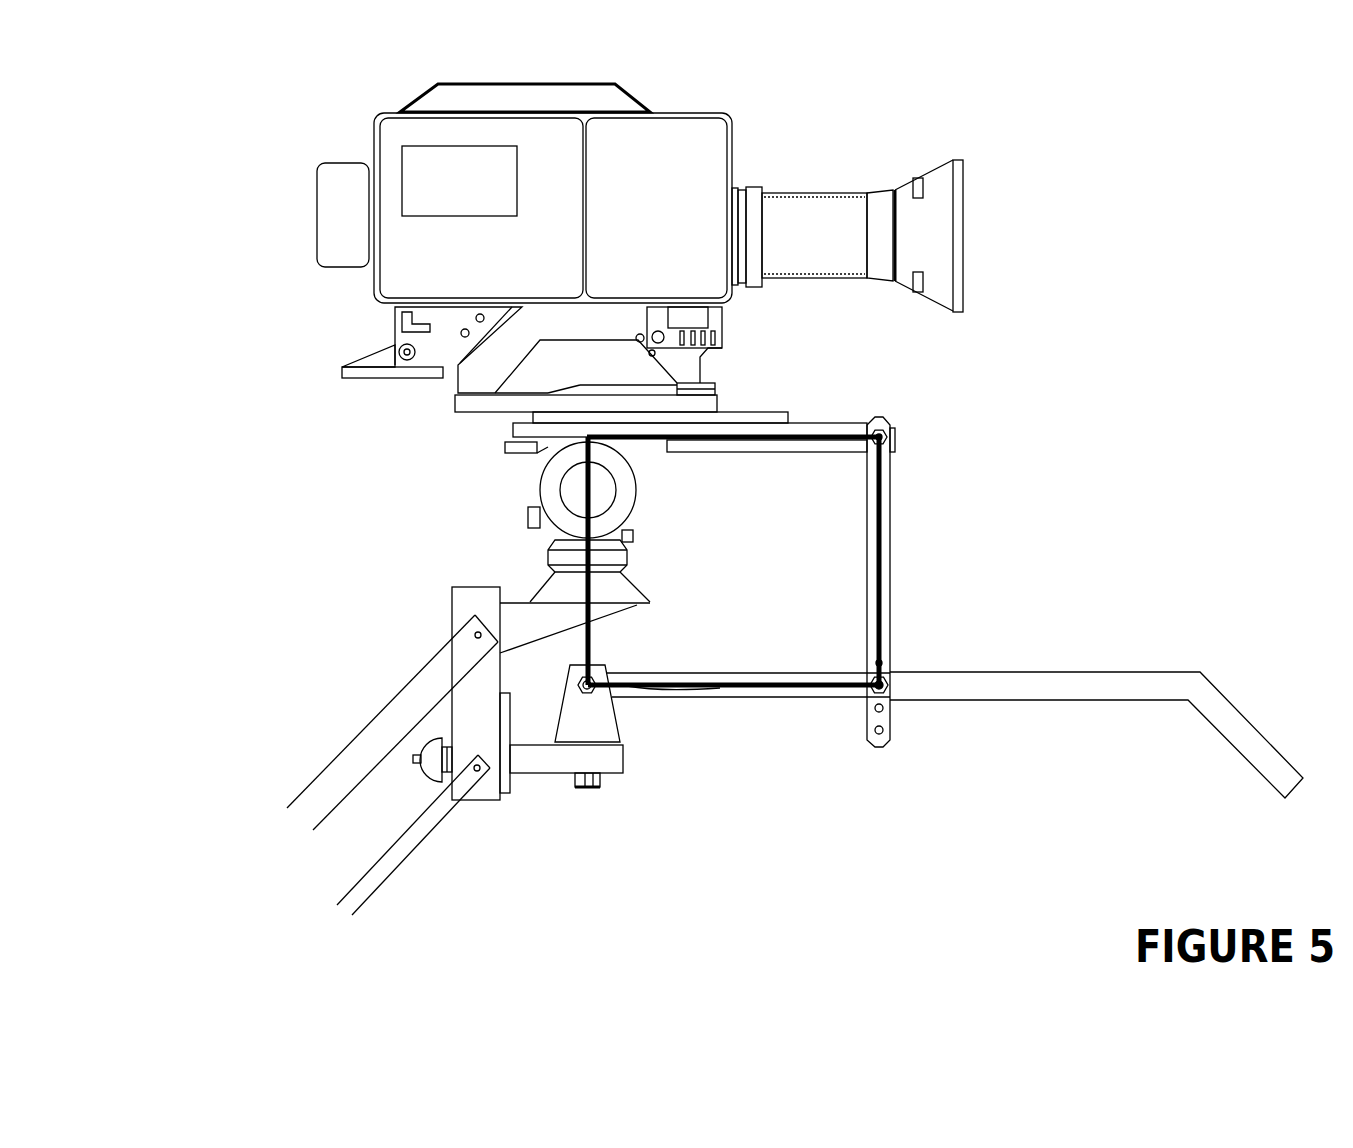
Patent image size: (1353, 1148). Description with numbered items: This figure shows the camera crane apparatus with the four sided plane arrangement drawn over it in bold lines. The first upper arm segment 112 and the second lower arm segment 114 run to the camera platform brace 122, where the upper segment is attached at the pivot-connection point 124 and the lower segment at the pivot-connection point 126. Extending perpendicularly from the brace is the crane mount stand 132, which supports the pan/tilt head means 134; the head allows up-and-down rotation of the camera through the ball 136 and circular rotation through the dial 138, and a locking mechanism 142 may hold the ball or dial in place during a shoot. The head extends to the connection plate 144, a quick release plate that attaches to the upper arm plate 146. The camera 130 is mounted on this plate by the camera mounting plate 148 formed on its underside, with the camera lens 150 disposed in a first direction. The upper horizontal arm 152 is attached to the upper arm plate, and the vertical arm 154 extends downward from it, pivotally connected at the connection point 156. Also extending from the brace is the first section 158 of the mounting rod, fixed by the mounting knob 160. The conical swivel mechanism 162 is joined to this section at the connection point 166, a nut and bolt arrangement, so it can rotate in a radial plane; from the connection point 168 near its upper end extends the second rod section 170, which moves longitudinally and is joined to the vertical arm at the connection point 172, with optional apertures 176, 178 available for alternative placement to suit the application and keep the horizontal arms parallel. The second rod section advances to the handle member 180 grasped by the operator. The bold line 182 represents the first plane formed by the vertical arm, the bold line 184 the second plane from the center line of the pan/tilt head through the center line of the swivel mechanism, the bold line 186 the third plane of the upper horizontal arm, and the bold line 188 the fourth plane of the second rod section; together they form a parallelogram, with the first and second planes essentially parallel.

The first upper arm segment 112 is at (375, 735).
The second lower arm segment 114 is at (400, 860).
The camera platform brace 122 is at (462, 592).
The pivot-connection point 124 is at (476, 635).
The pivot-connection point 126 is at (477, 772).
The camera 130 is at (348, 280).
The crane mount stand 132 is at (582, 630).
The pan/tilt head means 134 is at (530, 475).
The ball 136 is at (548, 485).
The dial 138 is at (620, 560).
The locking mechanism 142 is at (632, 537).
The connection plate 144 is at (518, 430).
The upper arm plate 146 is at (766, 420).
The camera mounting plate 148 is at (472, 403).
The camera lens 150 is at (937, 238).
The upper horizontal arm 152 is at (793, 445).
The vertical arm 154 is at (882, 500).
The connection point 156 is at (887, 428).
The first section of the mounting rod 158 is at (540, 762).
The mounting knob 160 is at (405, 773).
The swivel/pivot mechanism 162 is at (570, 715).
The connection point 166 is at (588, 787).
The connection point 168 is at (722, 690).
The second rod section 170 is at (788, 697).
The connection point 172 is at (890, 675).
The aperture 176 is at (887, 708).
The aperture 178 is at (887, 730).
The handle member 180 is at (1240, 735).
The bold line 182 is at (882, 585).
The bold line 184 is at (617, 447).
The bold line 186 is at (873, 420).
The bold line 188 is at (750, 686).